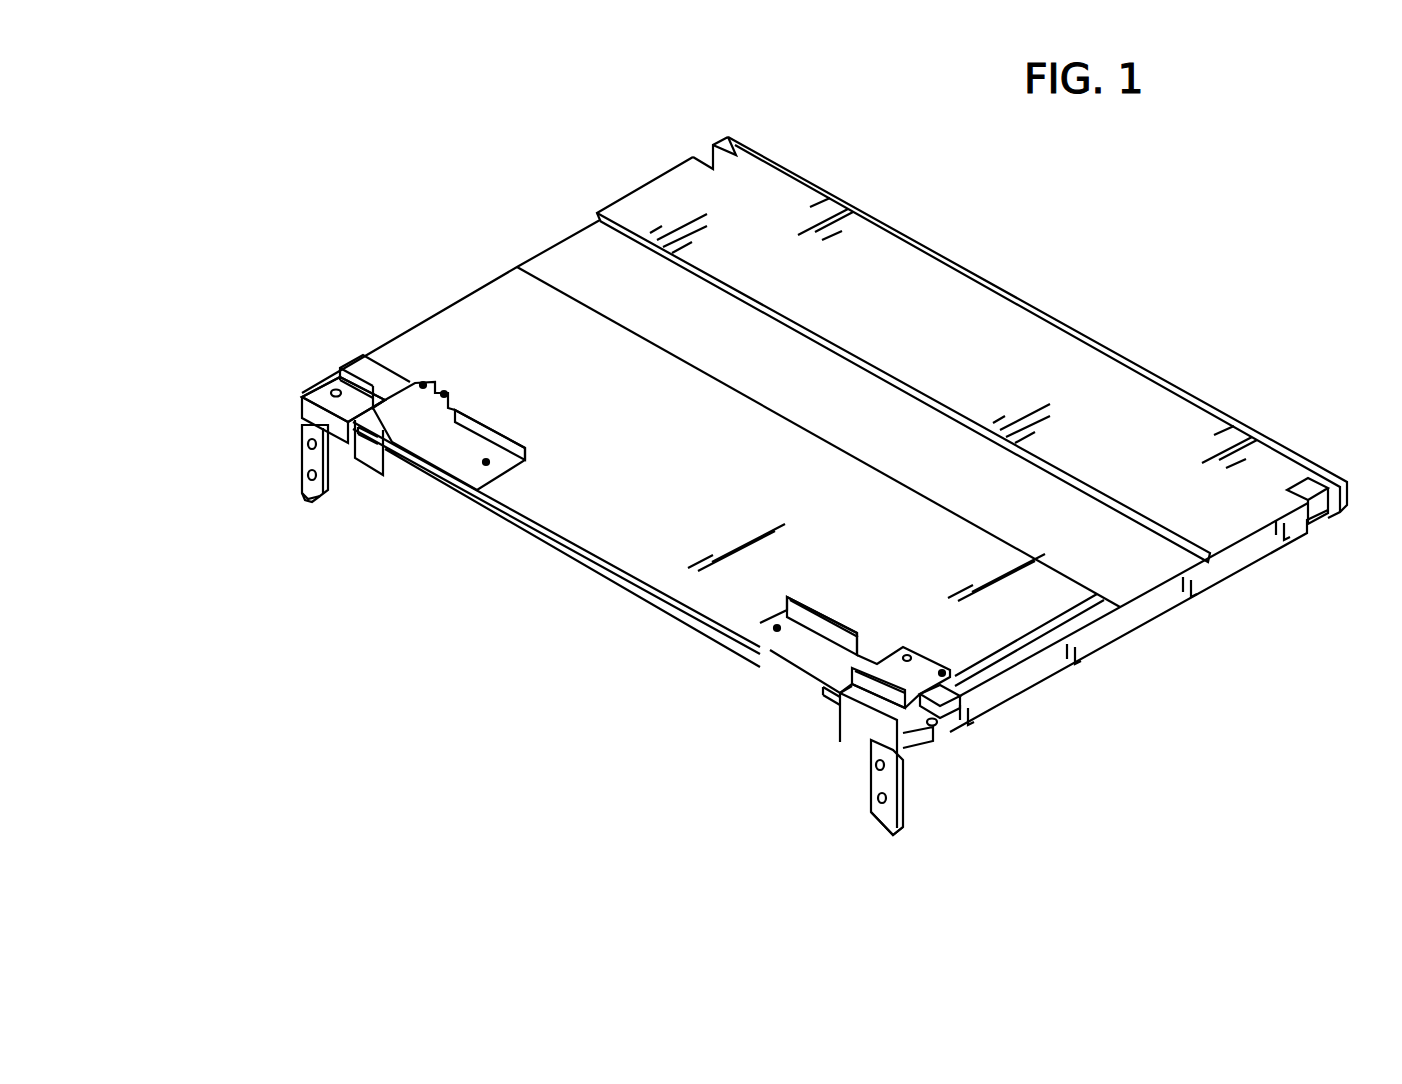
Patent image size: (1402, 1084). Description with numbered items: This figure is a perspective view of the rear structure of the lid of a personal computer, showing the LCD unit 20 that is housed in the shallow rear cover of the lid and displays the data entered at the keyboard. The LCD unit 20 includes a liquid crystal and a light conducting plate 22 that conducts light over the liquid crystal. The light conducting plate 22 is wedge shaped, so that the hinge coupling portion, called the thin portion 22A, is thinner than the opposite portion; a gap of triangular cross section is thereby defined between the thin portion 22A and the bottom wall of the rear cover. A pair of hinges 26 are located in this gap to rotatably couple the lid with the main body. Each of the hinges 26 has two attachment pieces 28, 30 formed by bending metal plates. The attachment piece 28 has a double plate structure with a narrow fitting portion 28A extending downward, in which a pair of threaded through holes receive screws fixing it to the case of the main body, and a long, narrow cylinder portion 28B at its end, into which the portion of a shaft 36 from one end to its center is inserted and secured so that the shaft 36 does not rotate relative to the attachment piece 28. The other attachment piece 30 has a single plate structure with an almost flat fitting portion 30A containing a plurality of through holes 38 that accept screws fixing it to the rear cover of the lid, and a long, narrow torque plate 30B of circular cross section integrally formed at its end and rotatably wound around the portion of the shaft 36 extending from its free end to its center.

The LCD unit 20 is at (1208, 338).
The light conducting plate 22 is at (818, 437).
The thin portion 22A is at (697, 527).
The hinges 26 is at (242, 410).
The attachment piece 28 is at (300, 470).
The fitting portion 28A is at (308, 496).
The cylinder portion 28B is at (303, 392).
The attachment piece 30 is at (440, 440).
The fitting portion 30A is at (460, 414).
The torque plate 30B is at (405, 460).
The shaft 36 is at (357, 448).
The through holes 38 is at (446, 393).